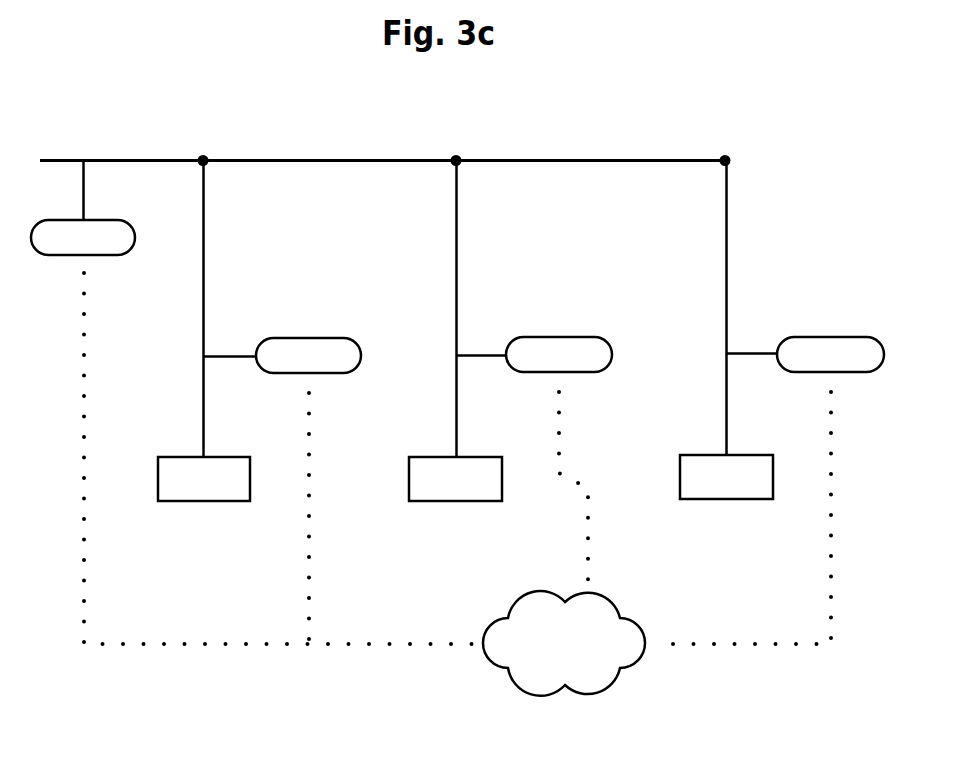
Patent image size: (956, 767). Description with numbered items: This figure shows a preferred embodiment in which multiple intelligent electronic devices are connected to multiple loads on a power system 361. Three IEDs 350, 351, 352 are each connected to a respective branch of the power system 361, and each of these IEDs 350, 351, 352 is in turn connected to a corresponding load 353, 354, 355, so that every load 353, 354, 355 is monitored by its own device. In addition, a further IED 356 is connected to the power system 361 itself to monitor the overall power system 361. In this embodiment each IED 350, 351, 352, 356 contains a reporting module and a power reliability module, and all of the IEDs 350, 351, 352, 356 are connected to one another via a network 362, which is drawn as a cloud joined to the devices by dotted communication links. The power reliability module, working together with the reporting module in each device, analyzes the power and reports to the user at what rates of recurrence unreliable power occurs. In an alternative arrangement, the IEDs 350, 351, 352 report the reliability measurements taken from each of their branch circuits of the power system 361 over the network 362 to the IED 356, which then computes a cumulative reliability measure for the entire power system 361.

The power system 361 is at (341, 152).
The IED 356 is at (98, 208).
The IED 350 is at (284, 338).
The IED 351 is at (535, 338).
The IED 352 is at (806, 337).
The load 353 is at (222, 331).
The load 354 is at (473, 331).
The load 355 is at (744, 330).
The network 362 is at (457, 484).